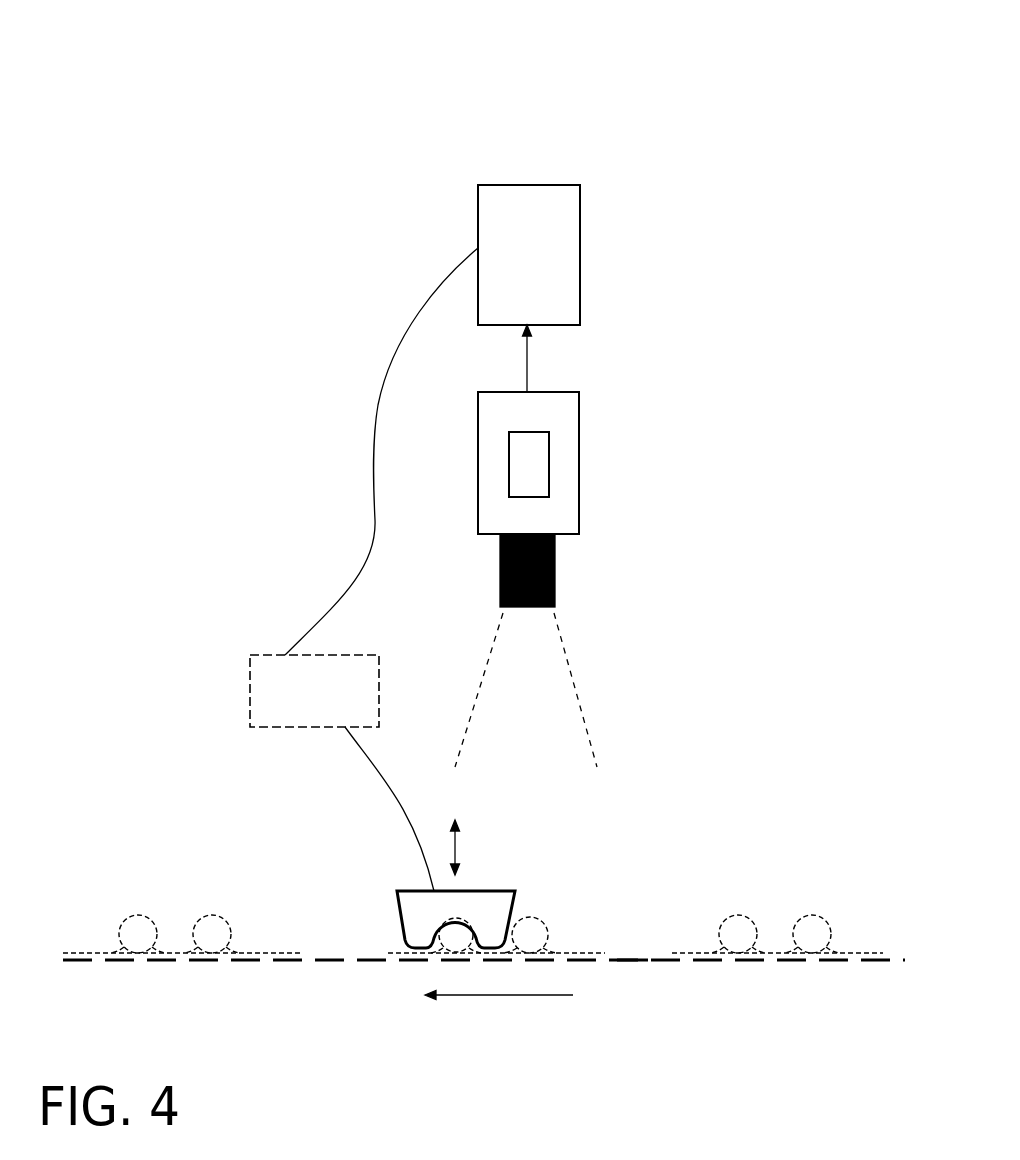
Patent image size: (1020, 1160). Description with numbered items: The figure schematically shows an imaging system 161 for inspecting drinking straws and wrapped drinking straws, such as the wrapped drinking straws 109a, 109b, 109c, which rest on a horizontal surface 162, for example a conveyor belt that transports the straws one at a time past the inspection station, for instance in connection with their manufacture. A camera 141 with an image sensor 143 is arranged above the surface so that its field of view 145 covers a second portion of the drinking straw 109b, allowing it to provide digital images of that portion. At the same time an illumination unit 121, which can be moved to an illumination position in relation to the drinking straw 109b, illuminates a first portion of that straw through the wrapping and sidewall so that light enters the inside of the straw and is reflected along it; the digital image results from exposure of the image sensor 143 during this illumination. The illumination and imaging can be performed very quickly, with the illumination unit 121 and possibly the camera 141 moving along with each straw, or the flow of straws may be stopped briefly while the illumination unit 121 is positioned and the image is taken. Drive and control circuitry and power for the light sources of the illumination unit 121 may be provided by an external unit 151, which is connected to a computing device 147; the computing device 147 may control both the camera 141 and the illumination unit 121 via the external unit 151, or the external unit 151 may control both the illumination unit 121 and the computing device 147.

The imaging system 161 is at (243, 82).
The horizontal surface 162 is at (635, 952).
The computing device 147 is at (580, 250).
The camera 141 is at (579, 448).
The image sensor 143 is at (509, 474).
The field of view 145 is at (546, 727).
The external unit 151 is at (250, 698).
The illumination unit 121 is at (400, 906).
The wrapped drinking straw 109a is at (182, 905).
The wrapped drinking straw 109b is at (552, 907).
The wrapped drinking straw 109c is at (790, 905).